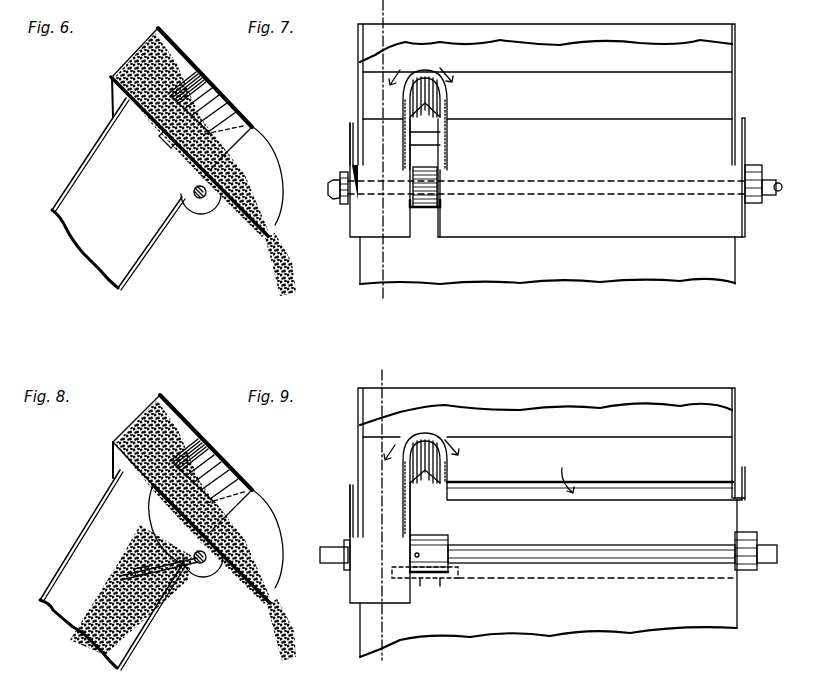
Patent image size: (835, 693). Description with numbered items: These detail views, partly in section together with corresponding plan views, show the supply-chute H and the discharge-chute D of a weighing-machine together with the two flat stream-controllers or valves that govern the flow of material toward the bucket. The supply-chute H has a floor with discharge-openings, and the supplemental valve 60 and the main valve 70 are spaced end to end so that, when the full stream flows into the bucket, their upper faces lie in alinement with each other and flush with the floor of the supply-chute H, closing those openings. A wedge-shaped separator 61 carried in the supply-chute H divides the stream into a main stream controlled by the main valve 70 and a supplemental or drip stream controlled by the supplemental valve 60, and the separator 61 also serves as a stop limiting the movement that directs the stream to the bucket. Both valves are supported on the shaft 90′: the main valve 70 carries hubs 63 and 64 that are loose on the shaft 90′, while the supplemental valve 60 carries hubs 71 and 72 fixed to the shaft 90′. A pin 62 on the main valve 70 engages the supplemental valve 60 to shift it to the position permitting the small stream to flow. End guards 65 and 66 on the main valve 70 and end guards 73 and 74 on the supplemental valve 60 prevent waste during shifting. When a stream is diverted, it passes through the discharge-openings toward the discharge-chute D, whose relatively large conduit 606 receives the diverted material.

In FIG. 6, the supplemental valve 60 is at (260, 227).
In FIG. 7, the supplemental valve 60 is at (396, 228).
In FIG. 8, the supplemental valve 60 is at (262, 598).
In FIG. 9, the supplemental valve 60 is at (395, 592).
In FIG. 6, the separator 61 is at (193, 78).
In FIG. 7, the separator 61 is at (448, 102).
In FIG. 8, the separator 61 is at (192, 444).
In FIG. 9, the separator 61 is at (435, 436).
In FIG. 6, the pin 62 is at (163, 142).
In FIG. 7, the pin 62 is at (428, 143).
In FIG. 8, the pin 62 is at (134, 570).
In FIG. 9, the pin 62 is at (428, 580).
In FIG. 7, the hub 63 is at (437, 178).
In FIG. 9, the hub 63 is at (440, 548).
In FIG. 7, the hub 64 is at (745, 176).
In FIG. 9, the hub 64 is at (740, 548).
In FIG. 7, the end guard 65 is at (441, 222).
In FIG. 8, the end guard 65 is at (152, 503).
In FIG. 9, the end guard 65 is at (450, 483).
In FIG. 7, the end guard 66 is at (742, 218).
In FIG. 9, the end guard 66 is at (745, 490).
In FIG. 7, the main valve 70 is at (582, 226).
In FIG. 8, the main valve 70 is at (157, 567).
In FIG. 9, the main valve 70 is at (545, 527).
In FIG. 7, the hub 71 is at (344, 203).
In FIG. 9, the hub 71 is at (349, 545).
In FIG. 6, the hub 72 is at (202, 207).
In FIG. 7, the hub 72 is at (419, 208).
In FIG. 8, the hub 72 is at (203, 572).
In FIG. 9, the hub 72 is at (442, 575).
In FIG. 7, the end guard 73 is at (352, 135).
In FIG. 9, the end guard 73 is at (352, 500).
In FIG. 6, the end guard 74 is at (262, 148).
In FIG. 7, the end guard 74 is at (446, 121).
In FIG. 8, the end guard 74 is at (270, 535).
In FIG. 9, the end guard 74 is at (415, 503).
In FIG. 6, the shaft 90′ is at (196, 190).
In FIG. 7, the shaft 90′ is at (344, 178).
In FIG. 8, the shaft 90′ is at (194, 552).
In FIG. 9, the shaft 90′ is at (337, 560).
In FIG. 6, the conduit 606 is at (147, 253).
In FIG. 8, the conduit 606 is at (157, 612).
In FIG. 6, the supply-chute H is at (213, 79).
In FIG. 7, the supply-chute H is at (740, 97).
In FIG. 8, the supply-chute H is at (220, 453).
In FIG. 9, the supply-chute H is at (740, 440).
In FIG. 6, the discharge-chute D is at (90, 150).
In FIG. 7, the discharge-chute D is at (722, 257).
In FIG. 8, the discharge-chute D is at (87, 528).
In FIG. 9, the discharge-chute D is at (718, 600).